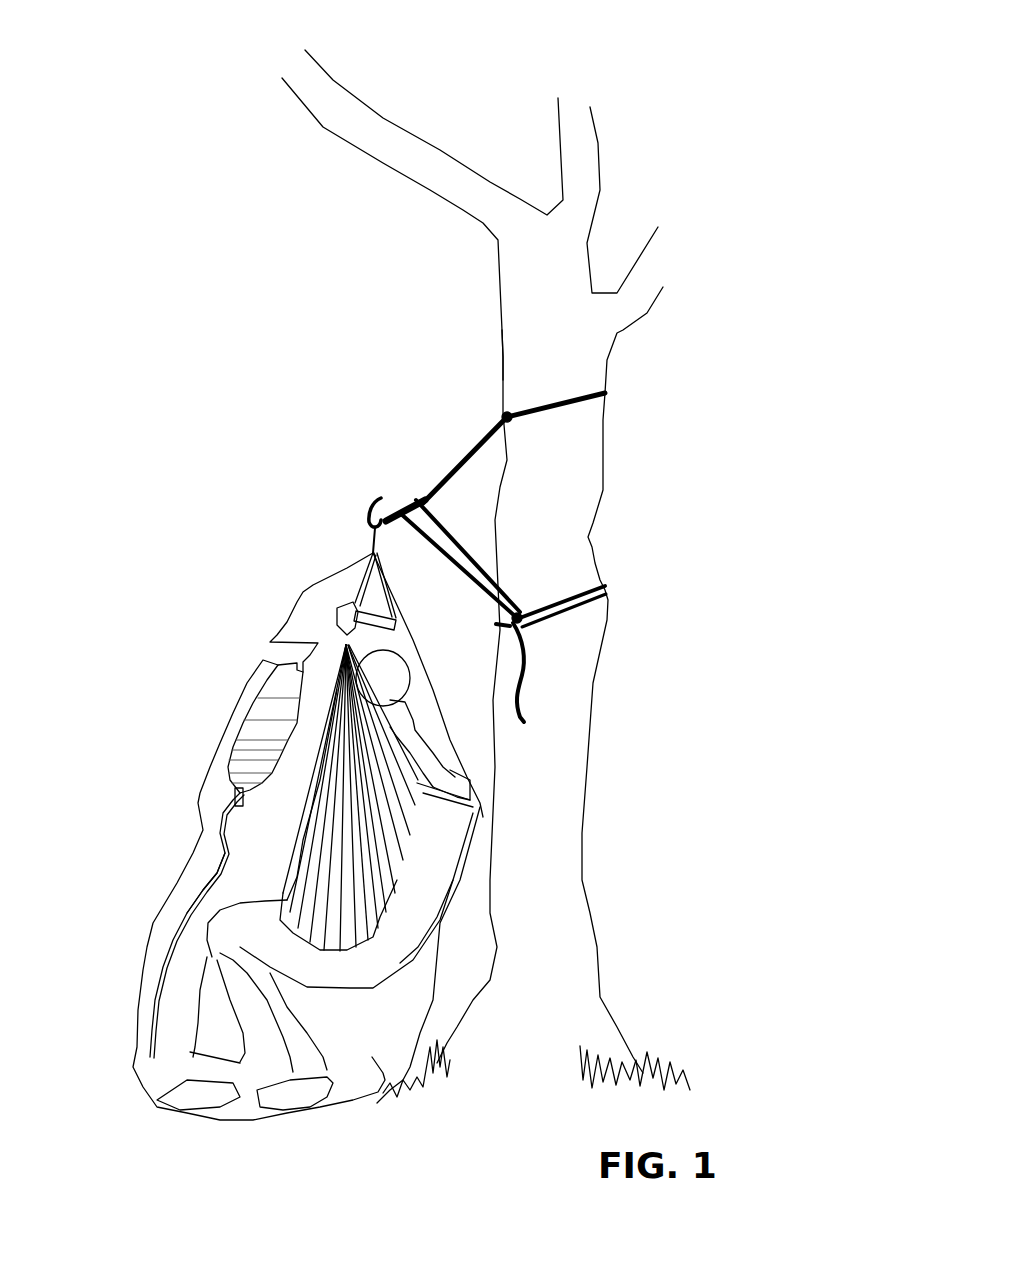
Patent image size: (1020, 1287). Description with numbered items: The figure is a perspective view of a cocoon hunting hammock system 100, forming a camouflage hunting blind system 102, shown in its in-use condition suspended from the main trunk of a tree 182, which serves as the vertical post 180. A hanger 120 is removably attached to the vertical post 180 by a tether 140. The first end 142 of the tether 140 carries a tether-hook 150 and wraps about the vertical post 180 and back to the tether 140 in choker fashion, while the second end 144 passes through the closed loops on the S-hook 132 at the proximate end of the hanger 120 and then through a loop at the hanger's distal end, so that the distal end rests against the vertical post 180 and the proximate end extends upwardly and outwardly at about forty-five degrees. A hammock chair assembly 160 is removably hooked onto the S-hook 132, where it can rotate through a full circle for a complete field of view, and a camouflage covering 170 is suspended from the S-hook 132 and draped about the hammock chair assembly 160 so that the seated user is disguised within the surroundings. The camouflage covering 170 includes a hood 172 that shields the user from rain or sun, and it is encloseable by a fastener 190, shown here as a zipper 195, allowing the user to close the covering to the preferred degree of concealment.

The cocoon hunting hammock system 100 is at (705, 118).
The camouflage hunting blind system 102 is at (707, 155).
The hanger 120 is at (452, 570).
The S-hook 132 is at (362, 504).
The tether 140 is at (450, 472).
The first end 142 is at (496, 405).
The second end 144 is at (525, 725).
The tether-hook 150 is at (497, 413).
The hammock chair assembly 160 is at (440, 916).
The camouflage covering 170 is at (401, 836).
The hood 172 is at (300, 590).
The vertical post 180 is at (497, 304).
The tree 182 is at (497, 356).
The fastener 190 is at (222, 803).
The zipper 195 is at (215, 866).